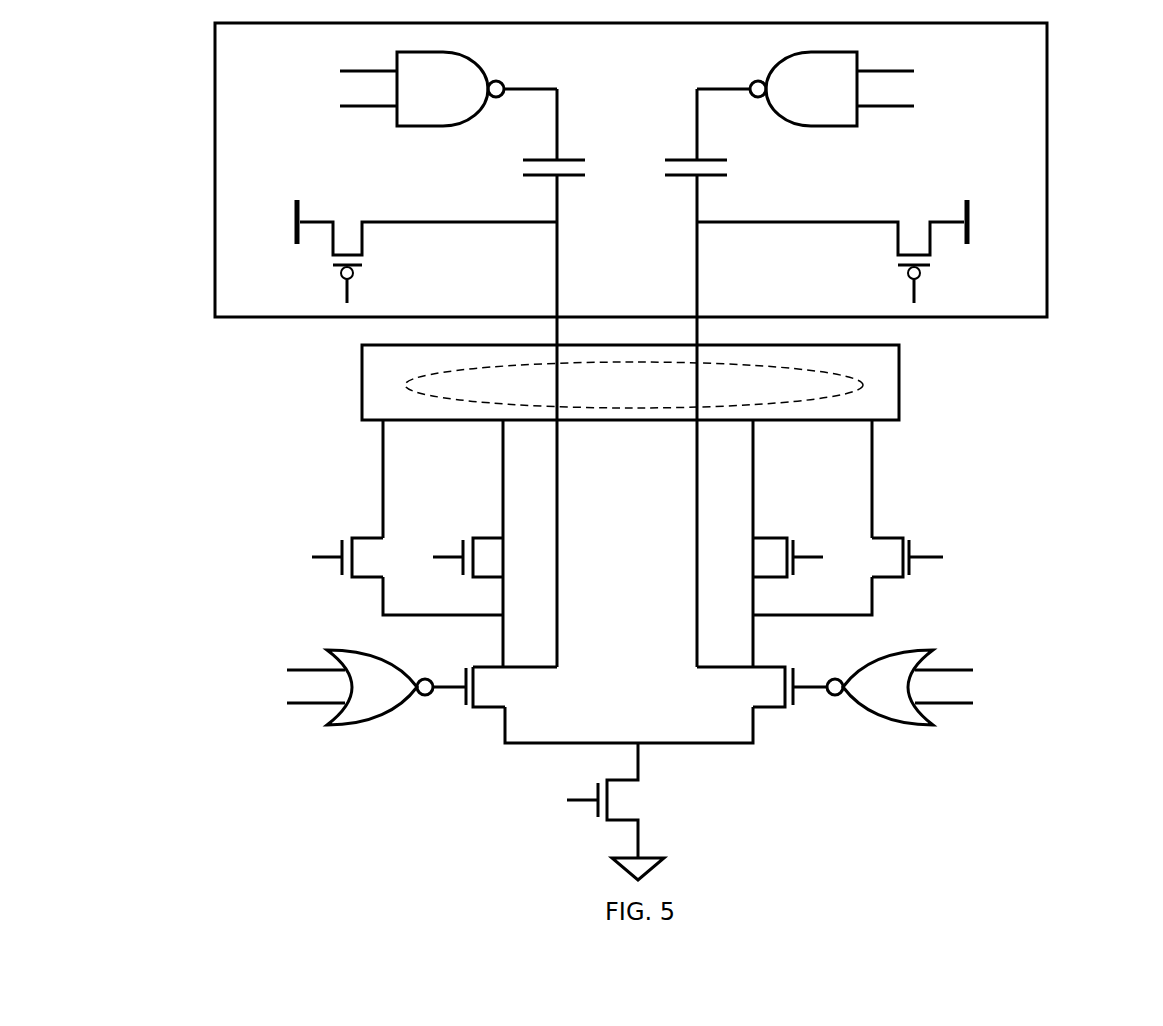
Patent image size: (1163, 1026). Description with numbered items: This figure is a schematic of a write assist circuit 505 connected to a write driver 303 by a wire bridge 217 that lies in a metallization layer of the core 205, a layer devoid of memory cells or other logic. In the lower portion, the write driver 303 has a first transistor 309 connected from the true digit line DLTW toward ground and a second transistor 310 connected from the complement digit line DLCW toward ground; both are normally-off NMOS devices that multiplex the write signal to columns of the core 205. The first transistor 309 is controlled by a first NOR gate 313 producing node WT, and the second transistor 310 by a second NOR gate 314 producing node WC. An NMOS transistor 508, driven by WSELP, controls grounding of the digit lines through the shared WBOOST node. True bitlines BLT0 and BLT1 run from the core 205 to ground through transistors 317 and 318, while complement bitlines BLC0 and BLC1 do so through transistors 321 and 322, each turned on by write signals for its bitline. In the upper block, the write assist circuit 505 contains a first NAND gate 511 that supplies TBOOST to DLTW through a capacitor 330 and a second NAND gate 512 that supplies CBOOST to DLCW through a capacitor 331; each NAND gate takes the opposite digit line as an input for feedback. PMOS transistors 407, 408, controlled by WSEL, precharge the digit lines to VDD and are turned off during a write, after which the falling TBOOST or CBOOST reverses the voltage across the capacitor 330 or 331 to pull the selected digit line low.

The write assist circuit 505 is at (1047, 172).
The first NAND gate 511 is at (453, 126).
The second NAND gate 512 is at (810, 126).
The capacitor 330 is at (588, 167).
The capacitor 331 is at (665, 167).
The PMOS transistor 407 is at (347, 222).
The PMOS transistor 408 is at (913, 222).
The core 205 is at (899, 382).
The wire bridge 217 is at (405, 383).
The write driver 303 is at (165, 603).
The transistor 318 is at (335, 552).
The transistor 317 is at (460, 552).
The transistor 321 is at (800, 552).
The transistor 322 is at (918, 552).
The first transistor 309 is at (517, 687).
The second transistor 310 is at (740, 687).
The first NOR gate 313 is at (380, 725).
The second NOR gate 314 is at (880, 725).
The NMOS transistor 508 is at (640, 800).